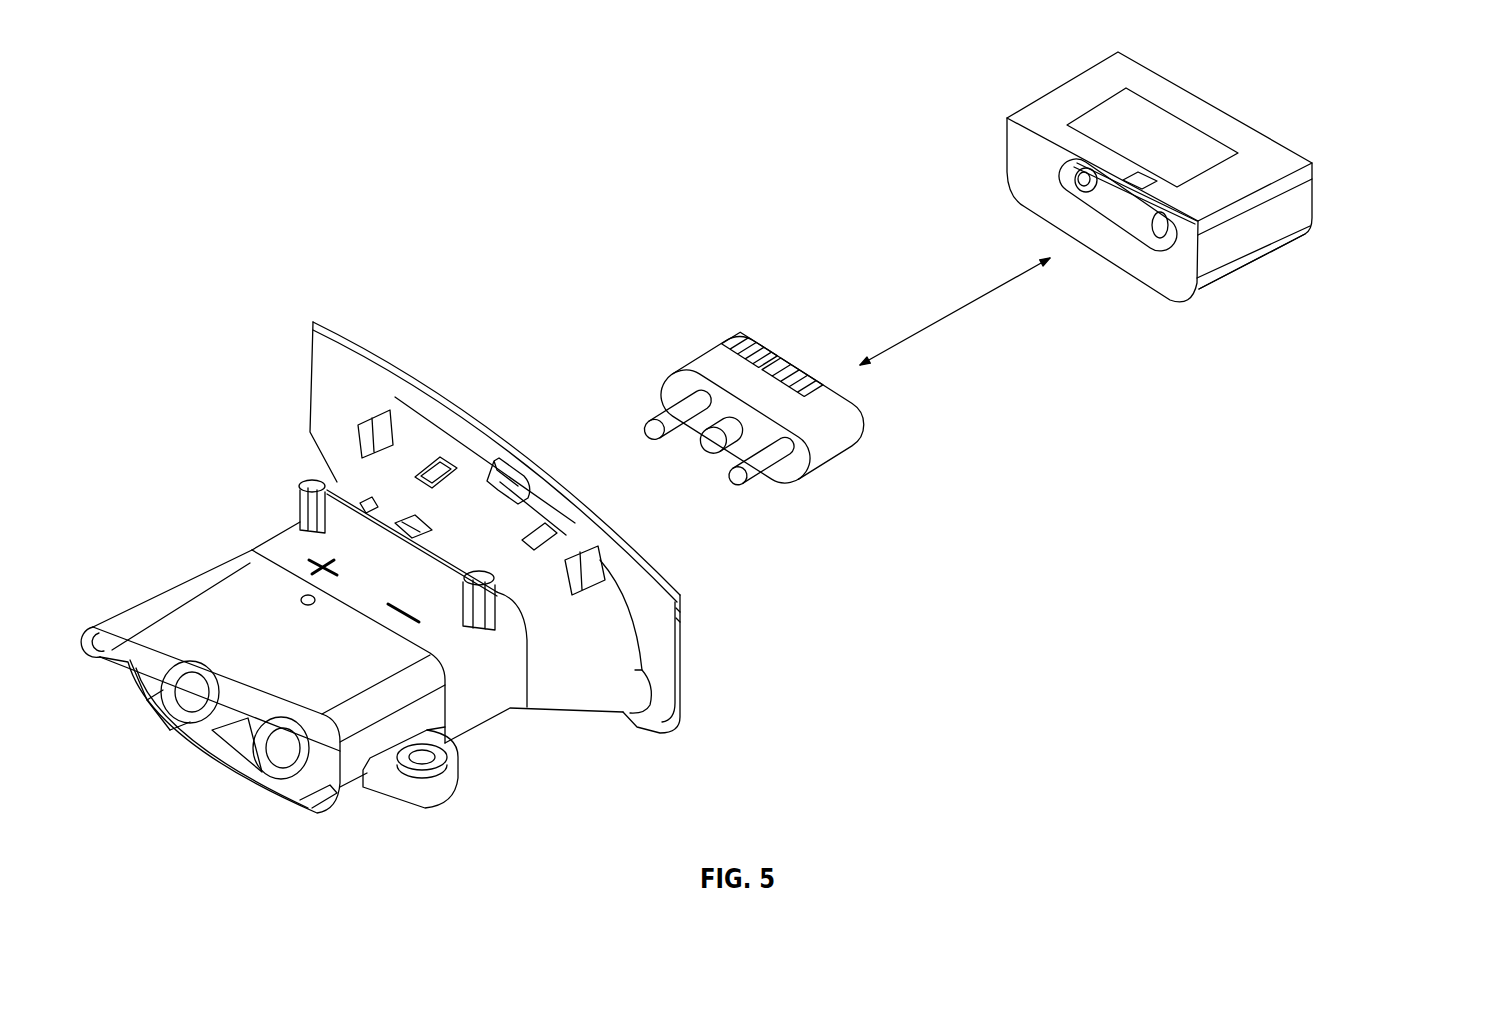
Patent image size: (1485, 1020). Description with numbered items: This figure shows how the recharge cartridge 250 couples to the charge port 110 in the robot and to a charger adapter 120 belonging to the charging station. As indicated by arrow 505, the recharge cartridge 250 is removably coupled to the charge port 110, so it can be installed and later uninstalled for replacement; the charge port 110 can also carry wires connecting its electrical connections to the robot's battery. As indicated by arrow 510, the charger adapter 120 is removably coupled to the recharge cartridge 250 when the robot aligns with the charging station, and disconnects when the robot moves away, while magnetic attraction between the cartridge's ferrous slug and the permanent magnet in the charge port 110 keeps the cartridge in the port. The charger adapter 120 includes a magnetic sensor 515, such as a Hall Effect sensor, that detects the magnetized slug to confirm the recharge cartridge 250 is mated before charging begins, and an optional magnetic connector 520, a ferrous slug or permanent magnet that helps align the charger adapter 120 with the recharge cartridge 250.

The charge port 110 is at (528, 697).
The charger adapter 120 is at (1117, 171).
The recharge cartridge 250 is at (847, 455).
The arrow 505 is at (620, 502).
The arrow 510 is at (953, 308).
The magnetic sensor 515 is at (1190, 127).
The magnetic connector 520 is at (1327, 235).